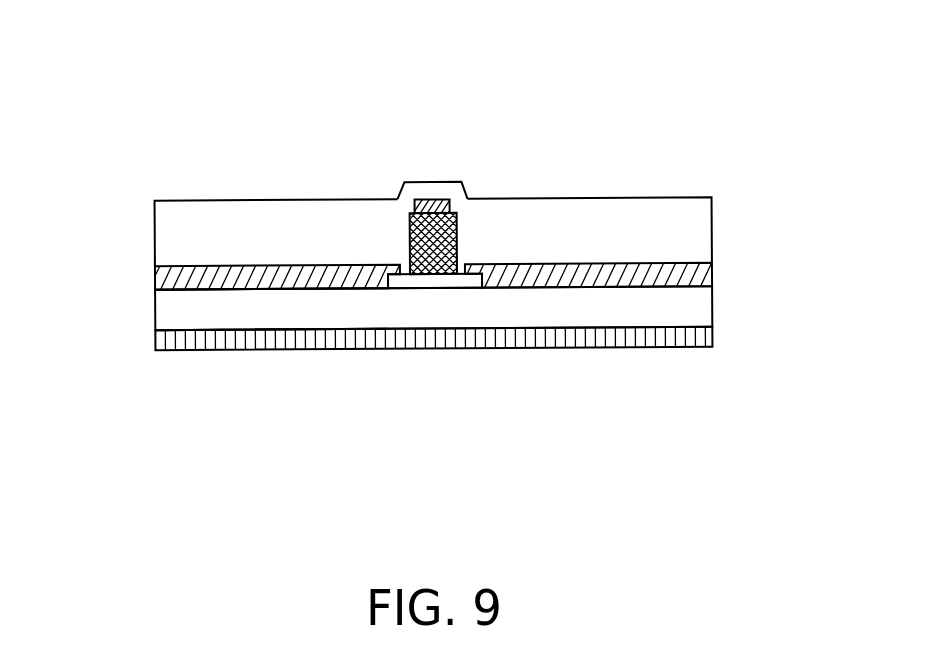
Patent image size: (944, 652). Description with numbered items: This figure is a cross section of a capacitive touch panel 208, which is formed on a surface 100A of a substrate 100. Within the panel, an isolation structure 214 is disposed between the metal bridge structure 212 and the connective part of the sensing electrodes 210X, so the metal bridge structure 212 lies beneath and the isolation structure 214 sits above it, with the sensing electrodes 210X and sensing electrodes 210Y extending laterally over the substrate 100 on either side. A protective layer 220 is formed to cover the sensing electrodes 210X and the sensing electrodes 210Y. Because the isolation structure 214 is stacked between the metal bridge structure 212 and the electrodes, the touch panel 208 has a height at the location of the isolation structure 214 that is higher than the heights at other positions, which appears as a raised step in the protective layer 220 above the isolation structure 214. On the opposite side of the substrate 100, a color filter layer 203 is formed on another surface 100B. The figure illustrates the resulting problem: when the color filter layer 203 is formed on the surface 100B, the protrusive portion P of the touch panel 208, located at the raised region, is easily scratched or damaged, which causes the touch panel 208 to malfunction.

The protrusive portion P is at (440, 167).
The capacitive touch panel 208 is at (506, 264).
The protective layer 220 is at (697, 230).
The sensing electrodes 210X is at (398, 199).
The sensing electrodes 210Y is at (283, 283).
The isolation structure 214 is at (458, 233).
The metal bridge structure 212 is at (437, 278).
The substrate 100 is at (697, 300).
The surface 100A is at (197, 284).
The surface 100B is at (193, 339).
The color filter layer 203 is at (697, 338).